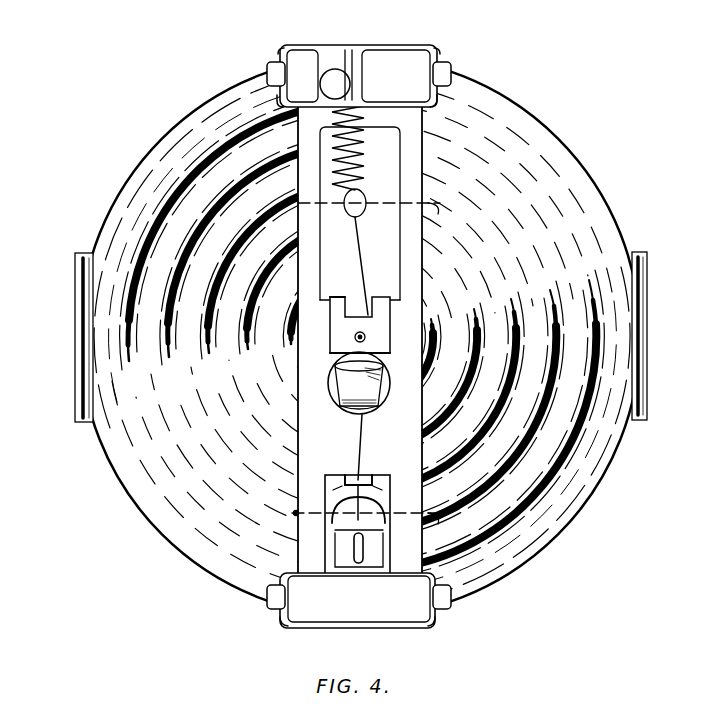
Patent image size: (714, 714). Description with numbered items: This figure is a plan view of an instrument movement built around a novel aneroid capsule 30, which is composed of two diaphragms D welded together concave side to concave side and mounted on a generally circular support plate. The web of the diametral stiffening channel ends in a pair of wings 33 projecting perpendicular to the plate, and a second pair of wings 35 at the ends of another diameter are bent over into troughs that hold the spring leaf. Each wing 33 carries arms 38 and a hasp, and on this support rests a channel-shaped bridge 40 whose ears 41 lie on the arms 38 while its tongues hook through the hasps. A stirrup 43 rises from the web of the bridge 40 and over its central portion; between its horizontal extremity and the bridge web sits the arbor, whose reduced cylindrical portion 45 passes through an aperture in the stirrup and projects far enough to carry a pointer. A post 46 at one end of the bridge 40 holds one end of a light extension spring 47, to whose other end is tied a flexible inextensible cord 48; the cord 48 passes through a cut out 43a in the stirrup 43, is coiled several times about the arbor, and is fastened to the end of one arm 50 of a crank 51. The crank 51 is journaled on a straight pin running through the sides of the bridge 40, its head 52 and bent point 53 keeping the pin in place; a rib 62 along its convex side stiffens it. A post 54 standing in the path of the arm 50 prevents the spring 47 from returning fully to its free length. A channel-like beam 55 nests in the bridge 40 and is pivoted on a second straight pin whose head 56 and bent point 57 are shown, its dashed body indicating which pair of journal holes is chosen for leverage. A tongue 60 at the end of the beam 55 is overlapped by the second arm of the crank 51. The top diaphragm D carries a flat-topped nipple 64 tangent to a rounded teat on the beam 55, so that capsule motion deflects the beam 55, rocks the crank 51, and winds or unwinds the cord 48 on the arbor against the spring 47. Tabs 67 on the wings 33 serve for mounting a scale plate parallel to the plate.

The capsule 30 is at (162, 550).
The wing 33 is at (400, 47).
The wing 35 is at (78, 398).
The arm 38 is at (282, 48).
The bridge 40 is at (303, 344).
The ear 41 is at (275, 72).
The stirrup 43 is at (340, 348).
The cut out 43a is at (330, 298).
The reduced cylindrical portion 45 is at (366, 337).
The post 46 is at (349, 82).
The extension spring 47 is at (350, 138).
The cord 48 is at (366, 268).
The arm 50 is at (326, 570).
The crank 51 is at (332, 486).
The head 52 is at (294, 513).
The bent point 53 is at (440, 515).
The post 54 is at (353, 478).
The beam 55 is at (322, 266).
The head 56 is at (298, 204).
The bent point 57 is at (440, 210).
The tongue 60 is at (372, 493).
The rib 62 is at (372, 560).
The nipple 64 is at (382, 372).
The tab 67 is at (305, 60).
The diaphragm D is at (207, 471).